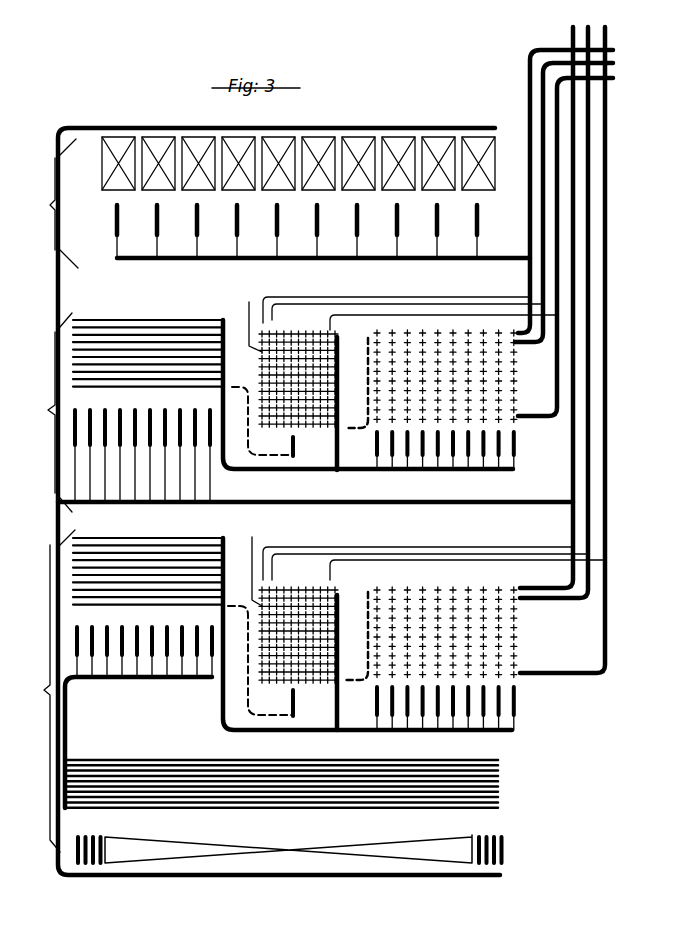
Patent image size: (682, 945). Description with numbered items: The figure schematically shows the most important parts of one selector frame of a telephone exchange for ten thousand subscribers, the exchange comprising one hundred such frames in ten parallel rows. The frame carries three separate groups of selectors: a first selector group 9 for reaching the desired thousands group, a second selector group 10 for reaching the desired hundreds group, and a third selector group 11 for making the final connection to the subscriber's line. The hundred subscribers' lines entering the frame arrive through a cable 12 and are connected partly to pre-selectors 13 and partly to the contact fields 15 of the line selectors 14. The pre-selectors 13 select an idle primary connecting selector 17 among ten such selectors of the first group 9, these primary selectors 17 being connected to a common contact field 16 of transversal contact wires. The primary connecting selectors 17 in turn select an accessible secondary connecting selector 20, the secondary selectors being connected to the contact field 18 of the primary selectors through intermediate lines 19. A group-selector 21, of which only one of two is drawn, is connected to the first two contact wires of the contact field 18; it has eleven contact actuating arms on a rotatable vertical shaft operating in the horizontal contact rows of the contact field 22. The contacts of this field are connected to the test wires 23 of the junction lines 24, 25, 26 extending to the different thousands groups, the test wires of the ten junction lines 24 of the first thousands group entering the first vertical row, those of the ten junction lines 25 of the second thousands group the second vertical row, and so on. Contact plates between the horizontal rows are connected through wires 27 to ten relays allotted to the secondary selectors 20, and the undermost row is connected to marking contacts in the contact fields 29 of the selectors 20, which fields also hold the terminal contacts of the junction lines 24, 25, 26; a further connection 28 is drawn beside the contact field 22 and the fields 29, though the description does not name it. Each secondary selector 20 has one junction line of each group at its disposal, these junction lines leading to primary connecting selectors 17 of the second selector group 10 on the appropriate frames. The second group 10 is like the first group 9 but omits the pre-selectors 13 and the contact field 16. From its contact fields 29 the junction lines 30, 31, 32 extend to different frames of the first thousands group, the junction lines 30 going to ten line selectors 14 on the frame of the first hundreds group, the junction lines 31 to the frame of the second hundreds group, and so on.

The first selector group 9 is at (44, 698).
The second selector group 10 is at (45, 412).
The third selector group 11 is at (52, 203).
The cable 12 is at (56, 526).
The pre-selectors 13 is at (504, 848).
The line selectors 14 is at (116, 232).
The contact fields of the line selectors 15 is at (102, 182).
The common contact field 16 is at (499, 782).
The primary connecting selectors 17 is at (165, 412).
The contact field of the primary selectors 18 is at (152, 330).
The intermediate lines 19 is at (283, 470).
The secondary connecting selectors 20 is at (453, 448).
The group-selector 21 is at (296, 447).
The contact field of the group-selector 22 is at (249, 445).
The test wires 23 is at (346, 306).
The junction lines of the first thousands group 24 is at (571, 433).
The junction lines of the second thousands group 25 is at (586, 459).
The junction lines of further thousands groups 26 is at (603, 478).
The wires to relays 27 is at (334, 386).
The lead 28 is at (355, 530).
The contact fields of the secondary selectors 29 is at (505, 392).
The junction lines of the first hundreds group 30 is at (528, 88).
The junction lines of the second hundreds group 31 is at (541, 118).
The junction lines of further hundreds groups 32 is at (555, 155).